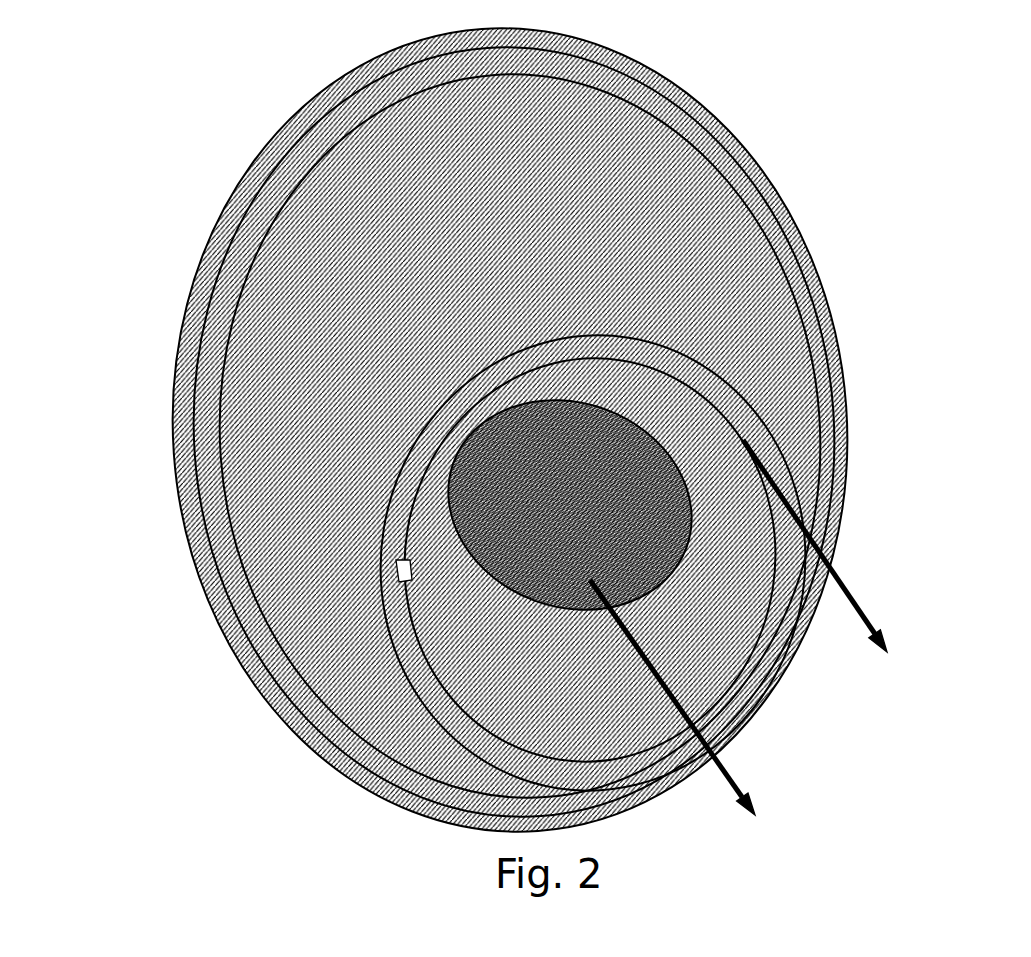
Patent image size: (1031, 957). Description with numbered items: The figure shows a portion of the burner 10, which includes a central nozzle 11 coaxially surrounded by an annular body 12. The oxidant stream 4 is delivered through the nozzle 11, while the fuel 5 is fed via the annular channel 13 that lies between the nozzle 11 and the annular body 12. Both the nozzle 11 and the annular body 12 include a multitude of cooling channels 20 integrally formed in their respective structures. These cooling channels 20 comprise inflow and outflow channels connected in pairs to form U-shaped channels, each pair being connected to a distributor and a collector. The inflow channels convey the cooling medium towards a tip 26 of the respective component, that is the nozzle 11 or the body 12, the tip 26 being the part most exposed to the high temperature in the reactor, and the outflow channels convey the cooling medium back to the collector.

The burner 10 is at (800, 168).
The central nozzle 11 is at (681, 445).
The annular body 12 is at (808, 418).
The annular channel 13 is at (402, 578).
The cooling channels 20 is at (262, 555).
The tip 26 is at (467, 720).
The fuel 5 is at (850, 584).
The oxidant stream 4 is at (713, 763).